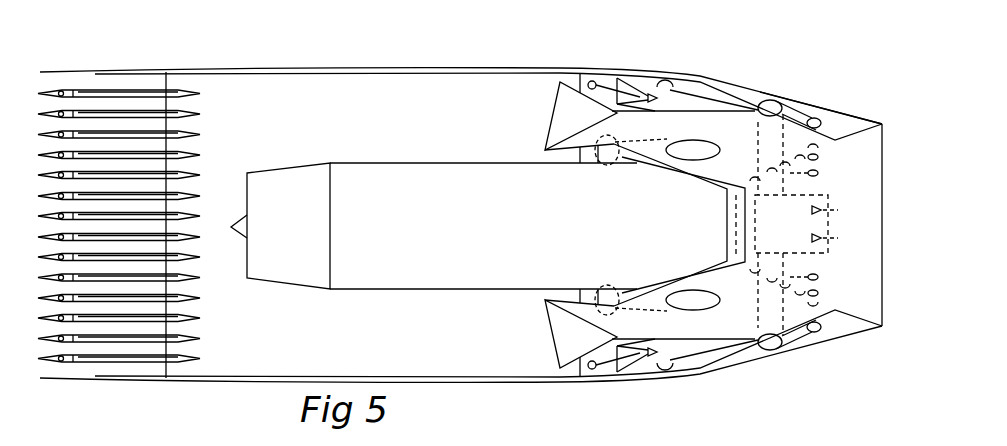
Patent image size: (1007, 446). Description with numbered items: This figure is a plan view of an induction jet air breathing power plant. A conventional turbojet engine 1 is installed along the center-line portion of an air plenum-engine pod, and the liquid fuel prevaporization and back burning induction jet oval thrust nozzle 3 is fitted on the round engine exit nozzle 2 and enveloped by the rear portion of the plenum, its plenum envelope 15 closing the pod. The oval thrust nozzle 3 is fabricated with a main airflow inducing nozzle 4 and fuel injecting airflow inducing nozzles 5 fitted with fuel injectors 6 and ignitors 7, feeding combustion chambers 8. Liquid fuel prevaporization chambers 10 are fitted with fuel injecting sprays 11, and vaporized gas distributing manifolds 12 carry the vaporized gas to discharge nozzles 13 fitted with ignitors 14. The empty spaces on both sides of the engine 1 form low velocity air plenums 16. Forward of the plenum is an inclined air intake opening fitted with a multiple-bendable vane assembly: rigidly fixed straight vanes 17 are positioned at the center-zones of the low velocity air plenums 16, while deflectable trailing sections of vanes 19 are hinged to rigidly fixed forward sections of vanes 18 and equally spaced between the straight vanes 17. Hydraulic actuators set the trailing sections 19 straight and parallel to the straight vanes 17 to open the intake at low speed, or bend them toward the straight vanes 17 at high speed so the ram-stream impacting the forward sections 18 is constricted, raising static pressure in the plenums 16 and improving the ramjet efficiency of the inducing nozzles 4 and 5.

The turbojet engine 1 is at (434, 226).
The engine exit nozzle 2 is at (726, 227).
The oval thrust nozzle 3 is at (883, 170).
The main airflow inducing nozzle 4 is at (577, 76).
The fuel injecting airflow inducing nozzle 5 is at (617, 80).
The fuel injector 6 is at (651, 94).
The ignitor 7 is at (668, 86).
The combustion chamber 8 is at (733, 132).
The liquid fuel prevaporization chamber 10 is at (829, 197).
The fuel injecting spray 11 is at (817, 237).
The vaporized gas distributing manifold 12 is at (770, 100).
The discharge nozzle 13 is at (787, 124).
The ignitor 14 is at (815, 117).
The plenum envelope 15 is at (851, 113).
The low velocity air plenum 16 is at (461, 225).
The rigidly fixed straight vane 17 is at (44, 136).
The fixed forward section of vane 18 is at (44, 94).
The deflectable trailing section of vane 19 is at (67, 91).